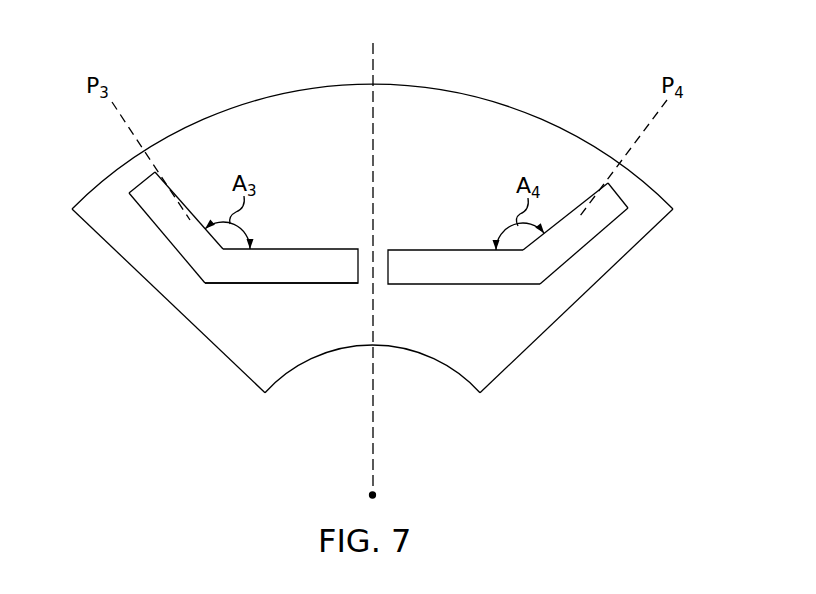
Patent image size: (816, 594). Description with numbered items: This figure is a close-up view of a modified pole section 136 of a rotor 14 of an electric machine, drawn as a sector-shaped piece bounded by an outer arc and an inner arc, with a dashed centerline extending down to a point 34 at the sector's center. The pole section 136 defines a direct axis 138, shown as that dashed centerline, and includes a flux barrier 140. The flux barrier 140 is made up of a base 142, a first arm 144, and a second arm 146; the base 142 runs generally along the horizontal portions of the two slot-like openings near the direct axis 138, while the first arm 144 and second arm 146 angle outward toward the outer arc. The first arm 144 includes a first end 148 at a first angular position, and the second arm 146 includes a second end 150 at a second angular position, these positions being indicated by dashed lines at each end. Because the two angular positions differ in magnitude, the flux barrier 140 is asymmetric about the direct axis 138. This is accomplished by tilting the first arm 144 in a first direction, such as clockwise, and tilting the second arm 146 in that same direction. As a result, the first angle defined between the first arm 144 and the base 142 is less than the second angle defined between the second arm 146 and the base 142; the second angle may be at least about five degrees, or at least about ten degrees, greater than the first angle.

The rotor 14 is at (512, 52).
The central axis 34 is at (376, 495).
The pole section 136 is at (528, 122).
The direct axis 138 is at (376, 49).
The flux barrier 140 is at (299, 256).
The base 142 is at (283, 285).
The first arm 144 is at (177, 247).
The second arm 146 is at (577, 253).
The first end 148 is at (138, 177).
The second end 150 is at (629, 186).